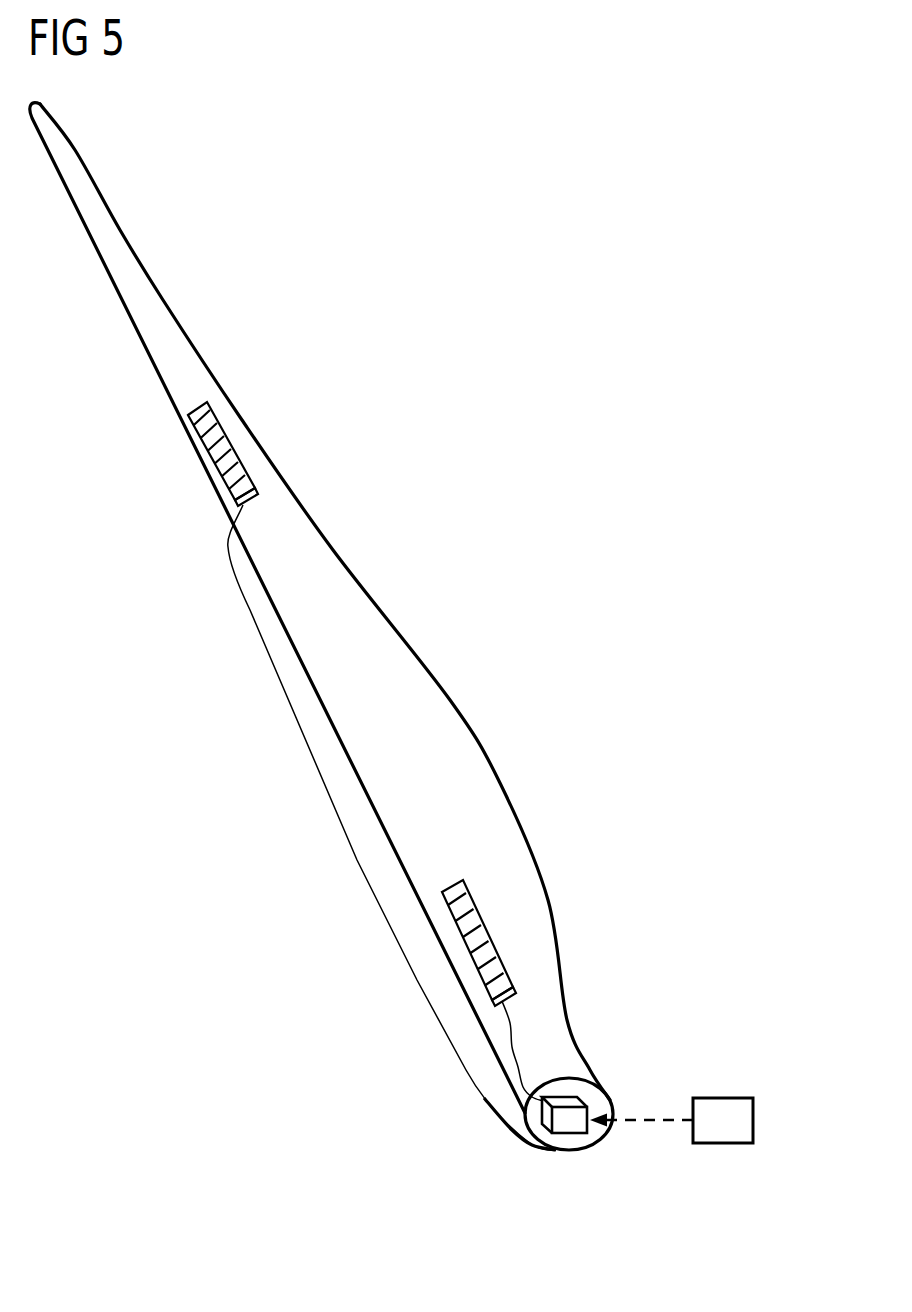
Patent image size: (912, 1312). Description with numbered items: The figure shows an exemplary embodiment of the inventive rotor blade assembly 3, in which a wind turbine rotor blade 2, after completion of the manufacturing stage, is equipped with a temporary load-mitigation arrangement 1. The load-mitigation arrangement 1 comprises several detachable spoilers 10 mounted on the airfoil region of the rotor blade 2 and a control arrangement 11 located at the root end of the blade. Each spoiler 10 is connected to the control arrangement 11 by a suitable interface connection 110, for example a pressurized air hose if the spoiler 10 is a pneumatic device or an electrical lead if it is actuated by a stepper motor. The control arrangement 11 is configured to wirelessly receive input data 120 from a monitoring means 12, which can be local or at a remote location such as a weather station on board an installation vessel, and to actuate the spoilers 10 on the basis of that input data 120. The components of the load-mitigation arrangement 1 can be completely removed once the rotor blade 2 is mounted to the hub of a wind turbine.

The load-mitigation arrangement 1 is at (456, 1158).
The rotor blade 2 is at (464, 694).
The rotor blade assembly 3 is at (485, 303).
The spoiler 10 is at (218, 453).
The control arrangement 11 is at (587, 1128).
The monitoring means 12 is at (723, 1097).
The interface connection 110 is at (518, 1065).
The input data 120 is at (641, 1119).